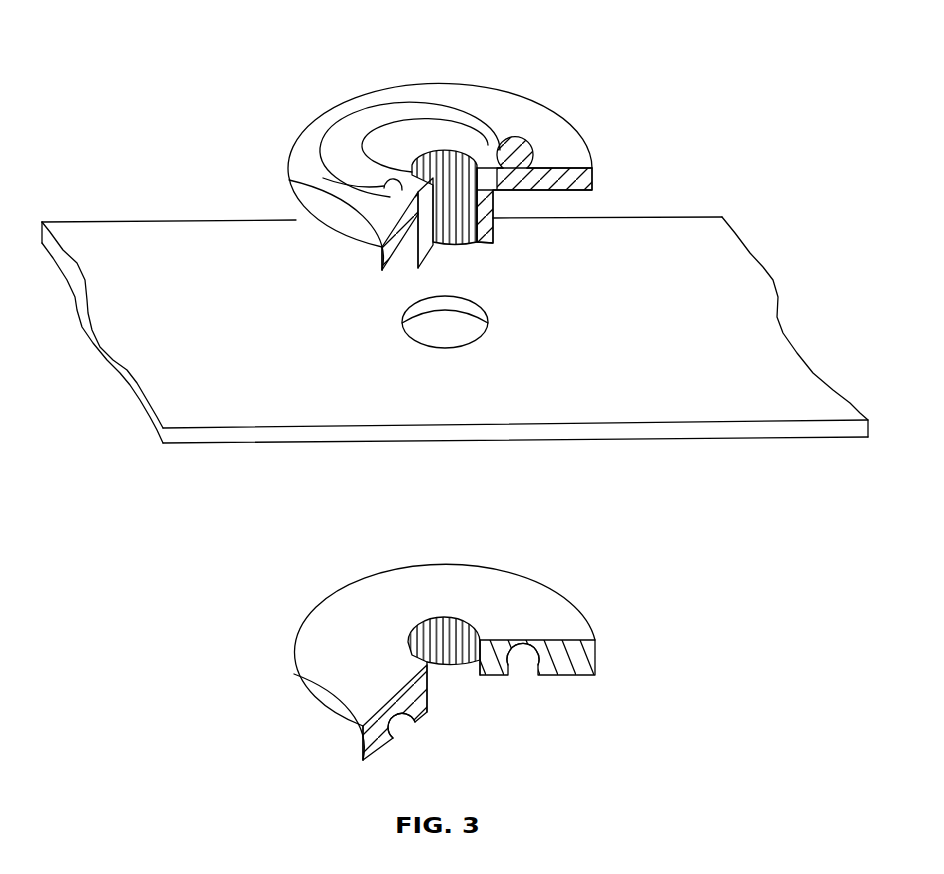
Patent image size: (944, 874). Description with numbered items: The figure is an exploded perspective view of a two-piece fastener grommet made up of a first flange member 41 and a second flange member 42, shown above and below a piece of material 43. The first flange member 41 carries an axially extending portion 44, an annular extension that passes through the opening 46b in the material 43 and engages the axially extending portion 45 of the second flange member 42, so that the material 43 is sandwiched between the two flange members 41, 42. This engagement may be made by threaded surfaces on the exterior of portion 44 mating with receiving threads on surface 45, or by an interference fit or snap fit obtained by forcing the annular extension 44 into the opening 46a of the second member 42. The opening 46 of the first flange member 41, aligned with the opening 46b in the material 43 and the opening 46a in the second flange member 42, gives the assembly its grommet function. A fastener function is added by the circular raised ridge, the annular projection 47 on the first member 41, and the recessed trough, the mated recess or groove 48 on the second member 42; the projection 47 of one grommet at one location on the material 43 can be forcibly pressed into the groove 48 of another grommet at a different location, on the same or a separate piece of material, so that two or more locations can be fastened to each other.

The first flange member 41 is at (546, 151).
The second flange member 42 is at (557, 662).
The material 43 is at (680, 407).
The axially extending portion 44 is at (493, 206).
The axially extending portion 45 is at (452, 642).
The opening 46 is at (441, 261).
The opening 46a is at (448, 672).
The opening 46b is at (442, 326).
The annular projection 47 is at (519, 137).
The recess or groove 48 is at (523, 666).